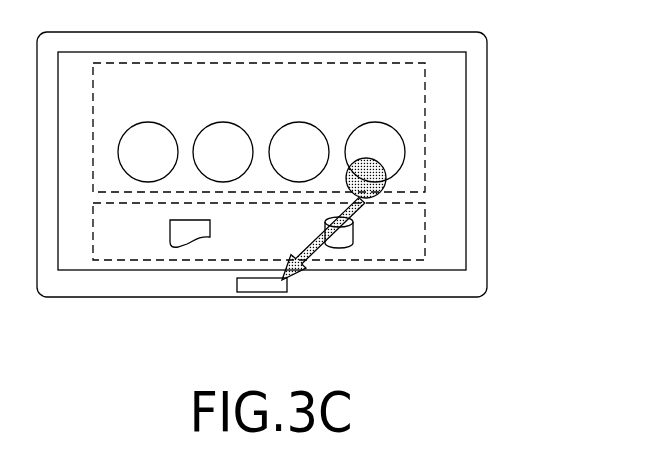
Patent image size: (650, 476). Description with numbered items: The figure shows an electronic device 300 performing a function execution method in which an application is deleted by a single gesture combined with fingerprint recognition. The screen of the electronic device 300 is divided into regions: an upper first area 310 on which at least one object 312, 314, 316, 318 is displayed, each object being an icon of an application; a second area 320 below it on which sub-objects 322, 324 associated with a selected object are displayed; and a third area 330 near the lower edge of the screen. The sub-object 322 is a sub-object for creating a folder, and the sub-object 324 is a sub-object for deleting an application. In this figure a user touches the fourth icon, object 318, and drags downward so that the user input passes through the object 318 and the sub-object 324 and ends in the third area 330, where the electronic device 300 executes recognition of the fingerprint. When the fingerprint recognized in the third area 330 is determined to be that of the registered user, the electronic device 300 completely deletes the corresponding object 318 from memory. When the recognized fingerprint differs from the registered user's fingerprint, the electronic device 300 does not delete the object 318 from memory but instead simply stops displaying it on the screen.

The electronic device 300 is at (264, 32).
The first area 310 is at (425, 125).
The object 312 is at (148, 121).
The object 314 is at (223, 121).
The object 316 is at (299, 121).
The object 318 is at (375, 121).
The second area 320 is at (425, 230).
The sub-object 322 is at (183, 245).
The sub-object 324 is at (336, 247).
The third area 330 is at (258, 284).